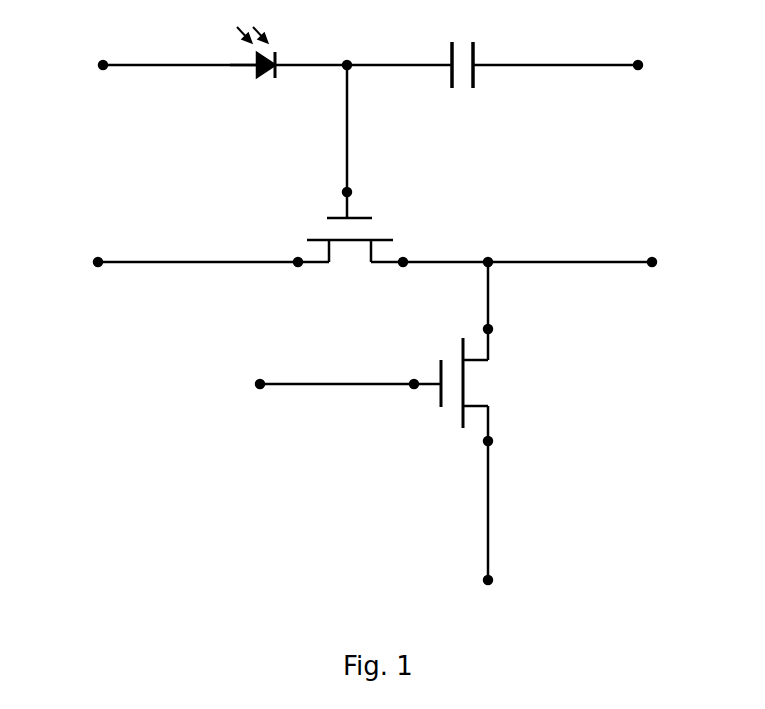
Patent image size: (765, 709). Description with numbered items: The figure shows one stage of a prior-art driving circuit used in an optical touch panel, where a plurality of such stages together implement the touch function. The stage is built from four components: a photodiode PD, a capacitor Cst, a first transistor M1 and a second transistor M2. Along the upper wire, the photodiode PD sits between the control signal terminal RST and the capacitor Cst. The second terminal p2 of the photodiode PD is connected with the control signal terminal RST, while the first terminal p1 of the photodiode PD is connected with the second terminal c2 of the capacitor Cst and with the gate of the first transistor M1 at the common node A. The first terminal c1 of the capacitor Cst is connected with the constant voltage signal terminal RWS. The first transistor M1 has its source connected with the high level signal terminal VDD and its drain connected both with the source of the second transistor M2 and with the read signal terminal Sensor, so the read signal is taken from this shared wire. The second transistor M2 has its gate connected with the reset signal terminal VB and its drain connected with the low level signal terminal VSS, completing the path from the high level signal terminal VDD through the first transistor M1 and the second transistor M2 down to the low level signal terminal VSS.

The control signal terminal RST is at (150, 65).
The photodiode PD is at (257, 71).
The second terminal of the photodiode p2 is at (235, 52).
The first terminal of the photodiode p1 is at (311, 52).
The node A is at (347, 122).
The second terminal of the capacitor c2 is at (399, 52).
The capacitor Cst is at (461, 81).
The first terminal of the capacitor c1 is at (516, 52).
The constant voltage signal terminal RWS is at (631, 65).
The first transistor M1 is at (350, 253).
The high level signal terminal VDD is at (186, 263).
The read signal terminal Sensor is at (543, 262).
The second transistor M2 is at (480, 351).
The reset signal terminal VB is at (326, 386).
The low level signal terminal VSS is at (485, 526).